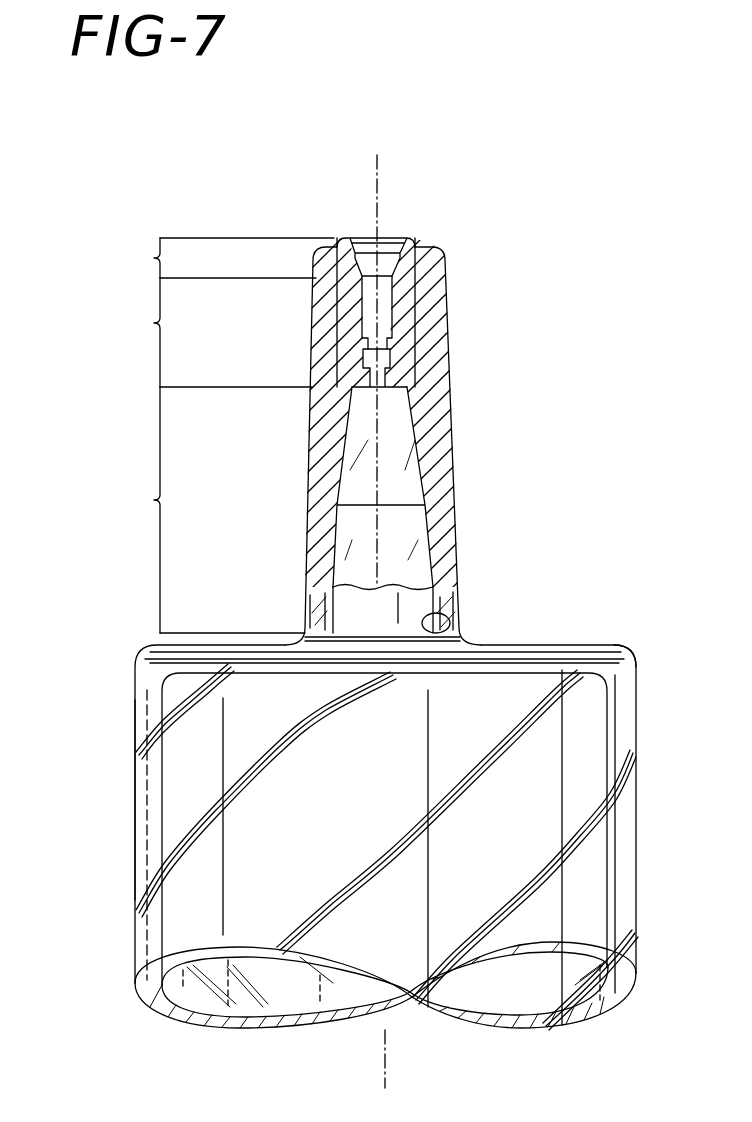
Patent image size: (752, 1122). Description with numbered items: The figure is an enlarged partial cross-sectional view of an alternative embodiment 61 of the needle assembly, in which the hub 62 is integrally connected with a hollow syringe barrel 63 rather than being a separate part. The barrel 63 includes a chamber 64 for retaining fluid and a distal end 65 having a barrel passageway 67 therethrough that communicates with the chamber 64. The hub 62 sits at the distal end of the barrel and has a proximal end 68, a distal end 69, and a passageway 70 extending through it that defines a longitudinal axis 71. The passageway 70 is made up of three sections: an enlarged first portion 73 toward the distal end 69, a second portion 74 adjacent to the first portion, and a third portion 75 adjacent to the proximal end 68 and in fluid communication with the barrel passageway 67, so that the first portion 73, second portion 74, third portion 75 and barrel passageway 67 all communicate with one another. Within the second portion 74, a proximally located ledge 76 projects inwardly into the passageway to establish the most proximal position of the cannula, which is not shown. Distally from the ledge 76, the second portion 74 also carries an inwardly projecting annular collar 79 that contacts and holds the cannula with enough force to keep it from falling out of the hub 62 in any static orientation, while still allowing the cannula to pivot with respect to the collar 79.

The alternative embodiment 61 is at (549, 163).
The hub 62 is at (453, 470).
The syringe barrel 63 is at (640, 843).
The chamber 64 is at (140, 760).
The distal end of barrel 65 is at (630, 660).
The barrel passageway 67 is at (448, 616).
The proximal end of hub 68 is at (460, 588).
The distal end of hub 69 is at (410, 240).
The passageway 70 is at (367, 241).
The longitudinal axis 71 is at (377, 186).
The first portion 73 is at (227, 258).
The second portion 74 is at (216, 332).
The third portion 75 is at (213, 510).
The ledge 76 is at (391, 366).
The annular collar 79 is at (383, 334).